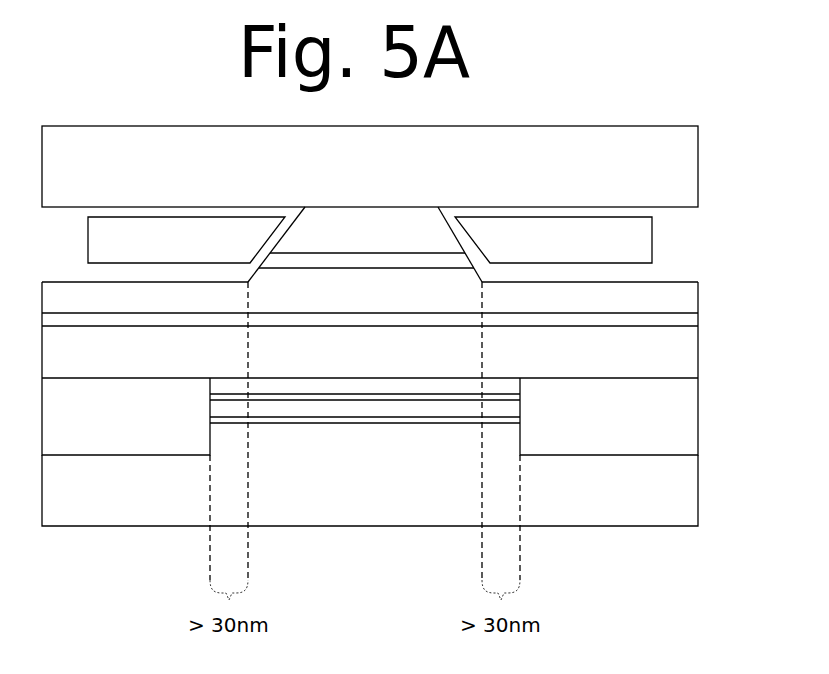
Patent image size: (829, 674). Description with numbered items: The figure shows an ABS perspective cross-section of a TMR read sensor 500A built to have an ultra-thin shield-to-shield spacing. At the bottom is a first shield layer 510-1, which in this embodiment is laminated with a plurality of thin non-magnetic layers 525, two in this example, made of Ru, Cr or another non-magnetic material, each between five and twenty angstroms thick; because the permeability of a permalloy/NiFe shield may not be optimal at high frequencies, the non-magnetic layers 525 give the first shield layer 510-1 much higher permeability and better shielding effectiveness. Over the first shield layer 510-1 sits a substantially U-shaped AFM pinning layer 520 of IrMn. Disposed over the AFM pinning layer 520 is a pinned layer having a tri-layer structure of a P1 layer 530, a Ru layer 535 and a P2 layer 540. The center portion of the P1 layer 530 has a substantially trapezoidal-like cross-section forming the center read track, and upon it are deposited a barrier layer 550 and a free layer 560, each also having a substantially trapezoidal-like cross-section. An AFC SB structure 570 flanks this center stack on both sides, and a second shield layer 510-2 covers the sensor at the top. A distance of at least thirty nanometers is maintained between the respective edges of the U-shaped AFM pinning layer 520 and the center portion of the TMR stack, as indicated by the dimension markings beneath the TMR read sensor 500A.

The TMR read sensor 500A is at (729, 110).
The first shield layer 510-1 is at (370, 490).
The second shield layer 510-2 is at (370, 166).
The AFM pinning layer 520 is at (370, 416).
The thin non-magnetic layers 525 is at (417, 395).
The P1 layer 530 is at (370, 352).
The Ru layer 535 is at (698, 320).
The P2 layer 540 is at (370, 298).
The barrier layer 550 is at (355, 262).
The free layer 560 is at (365, 244).
The AFC SB structure 570 is at (370, 240).